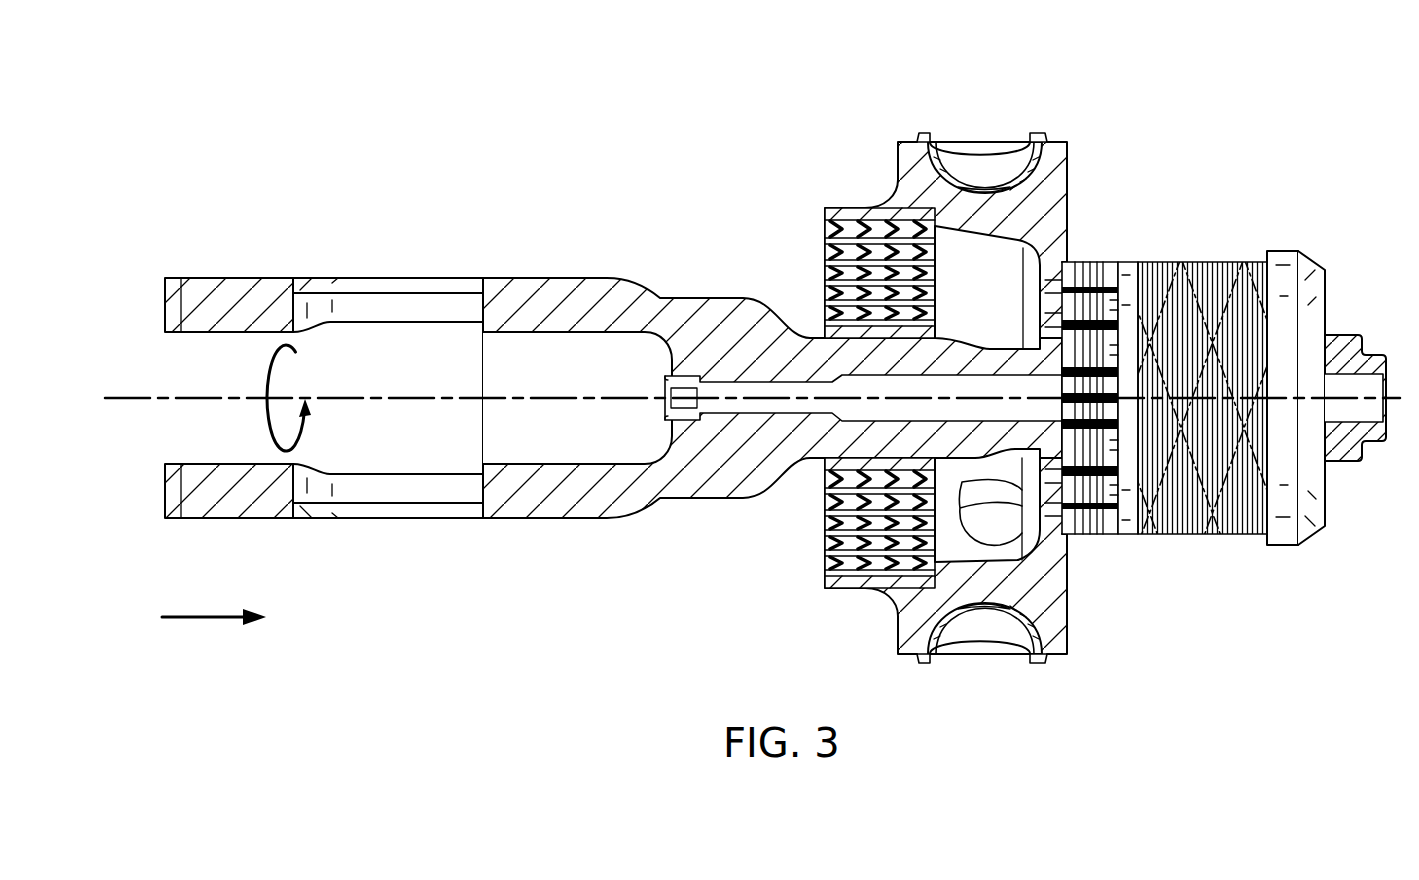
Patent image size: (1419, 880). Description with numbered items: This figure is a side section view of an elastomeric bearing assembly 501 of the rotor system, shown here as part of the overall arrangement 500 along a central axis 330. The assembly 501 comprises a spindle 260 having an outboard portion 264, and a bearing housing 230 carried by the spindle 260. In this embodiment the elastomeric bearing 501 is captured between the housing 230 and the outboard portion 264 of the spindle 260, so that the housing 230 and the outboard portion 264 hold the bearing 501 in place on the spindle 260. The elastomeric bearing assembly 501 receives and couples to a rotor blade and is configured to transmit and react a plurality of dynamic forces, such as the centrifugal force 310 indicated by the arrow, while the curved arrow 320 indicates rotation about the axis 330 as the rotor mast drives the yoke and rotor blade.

The motor assembly 500 is at (747, 358).
The elastomeric bearing assembly 501 is at (1207, 236).
The bearing housing 230 is at (1060, 155).
The spindle 260 is at (657, 490).
The outboard portion 264 is at (1348, 335).
The centrifugal force 310 is at (195, 620).
The rotation direction 320 is at (268, 376).
The rotational axis 330 is at (126, 402).